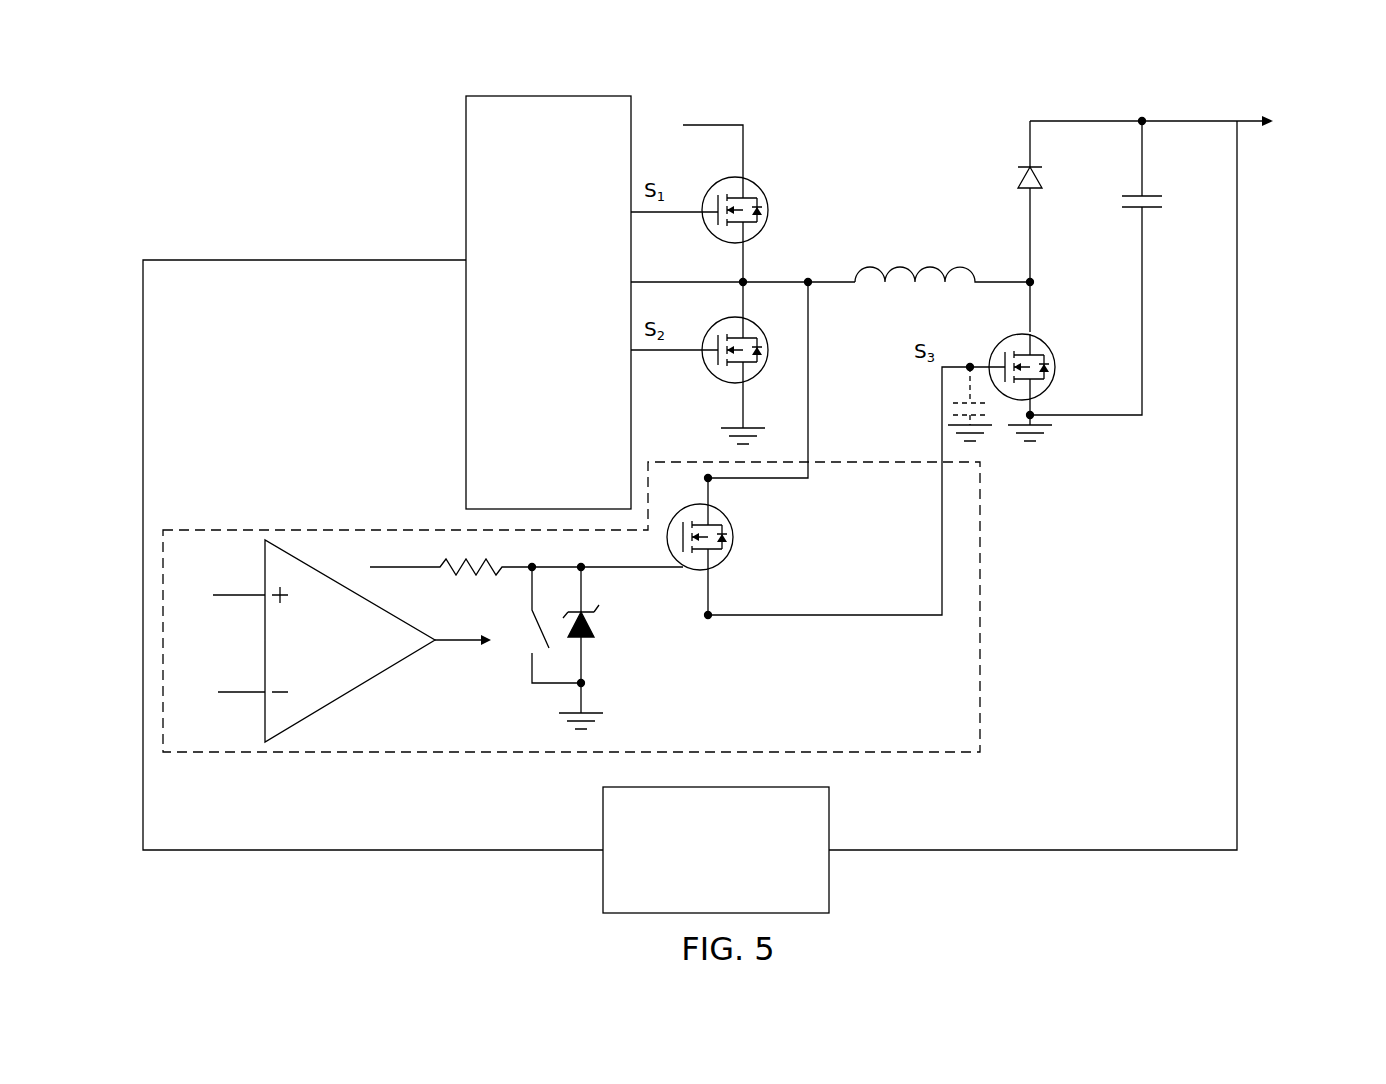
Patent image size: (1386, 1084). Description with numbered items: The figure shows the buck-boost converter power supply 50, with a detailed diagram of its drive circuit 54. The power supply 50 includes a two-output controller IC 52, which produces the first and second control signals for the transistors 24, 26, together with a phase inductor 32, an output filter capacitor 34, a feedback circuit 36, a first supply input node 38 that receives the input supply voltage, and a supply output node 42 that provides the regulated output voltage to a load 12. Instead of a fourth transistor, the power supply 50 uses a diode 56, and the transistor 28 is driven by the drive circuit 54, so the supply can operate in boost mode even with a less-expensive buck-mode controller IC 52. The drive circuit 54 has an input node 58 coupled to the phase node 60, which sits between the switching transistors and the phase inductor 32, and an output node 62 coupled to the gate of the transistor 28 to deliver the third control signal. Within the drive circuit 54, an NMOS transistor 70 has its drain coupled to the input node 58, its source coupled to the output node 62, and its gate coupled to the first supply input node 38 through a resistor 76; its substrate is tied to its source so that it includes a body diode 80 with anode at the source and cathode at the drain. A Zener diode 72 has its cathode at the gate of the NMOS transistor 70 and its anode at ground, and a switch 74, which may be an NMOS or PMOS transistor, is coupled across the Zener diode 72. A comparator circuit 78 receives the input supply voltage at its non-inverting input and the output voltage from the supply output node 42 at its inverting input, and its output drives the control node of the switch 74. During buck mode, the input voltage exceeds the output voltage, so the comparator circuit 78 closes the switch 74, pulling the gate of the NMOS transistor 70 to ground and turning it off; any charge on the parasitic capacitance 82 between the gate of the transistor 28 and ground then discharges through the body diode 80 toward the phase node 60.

The buck-boost converter power supply 50 is at (148, 870).
The controller IC 52 is at (548, 96).
The first supply input node 38 is at (743, 147).
The transistor 24 is at (768, 196).
The transistor 26 is at (748, 320).
The transistor 28 is at (1055, 345).
The phase node 60 is at (812, 279).
The phase inductor 32 is at (901, 265).
The diode 56 is at (1017, 180).
The supply output node 42 is at (1142, 121).
The load 12 is at (1314, 119).
The output filter capacitor 34 is at (1146, 200).
The parasitic capacitance 82 is at (957, 398).
The input node 58 is at (808, 412).
The output node 62 is at (942, 428).
The drive circuit 54 is at (980, 584).
The body diode 80 is at (735, 532).
The NMOS transistor 70 is at (742, 574).
The resistor 76 is at (450, 575).
The switch 74 is at (522, 657).
The Zener diode 72 is at (596, 634).
The comparator circuit 78 is at (370, 698).
The feedback circuit 36 is at (829, 808).